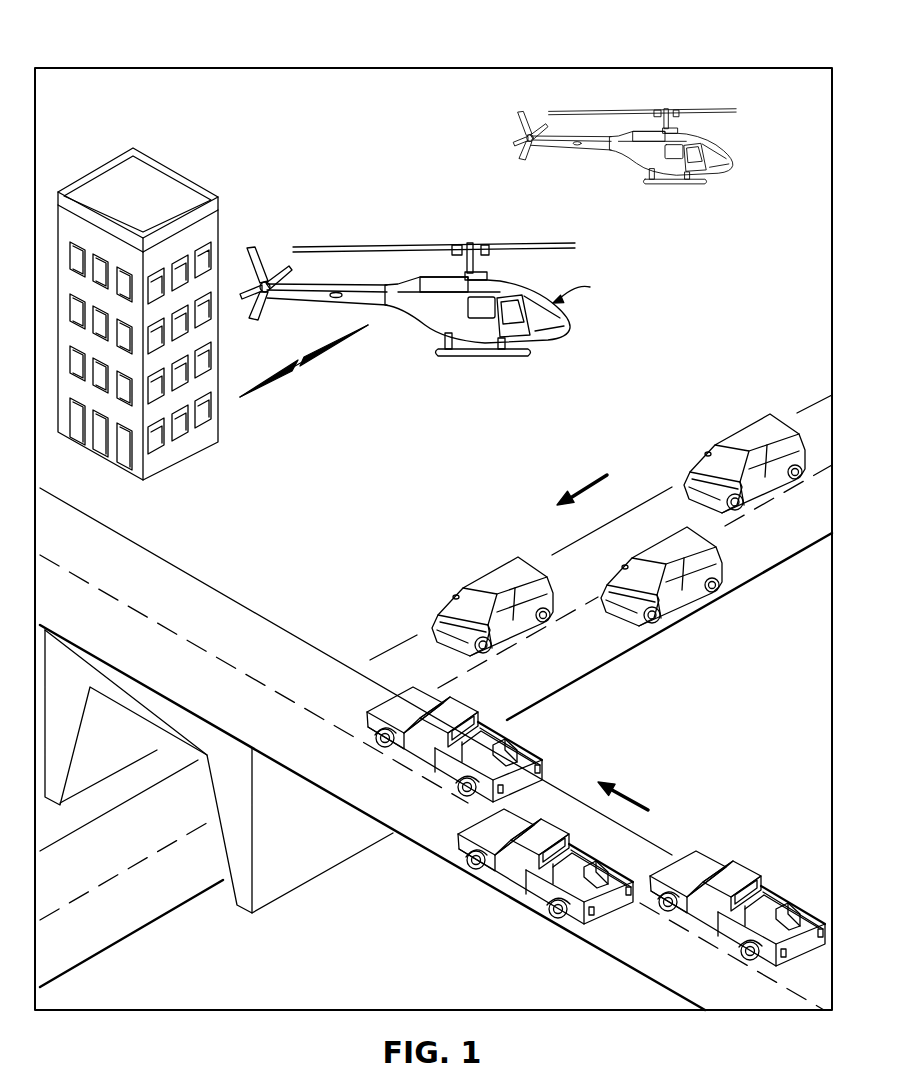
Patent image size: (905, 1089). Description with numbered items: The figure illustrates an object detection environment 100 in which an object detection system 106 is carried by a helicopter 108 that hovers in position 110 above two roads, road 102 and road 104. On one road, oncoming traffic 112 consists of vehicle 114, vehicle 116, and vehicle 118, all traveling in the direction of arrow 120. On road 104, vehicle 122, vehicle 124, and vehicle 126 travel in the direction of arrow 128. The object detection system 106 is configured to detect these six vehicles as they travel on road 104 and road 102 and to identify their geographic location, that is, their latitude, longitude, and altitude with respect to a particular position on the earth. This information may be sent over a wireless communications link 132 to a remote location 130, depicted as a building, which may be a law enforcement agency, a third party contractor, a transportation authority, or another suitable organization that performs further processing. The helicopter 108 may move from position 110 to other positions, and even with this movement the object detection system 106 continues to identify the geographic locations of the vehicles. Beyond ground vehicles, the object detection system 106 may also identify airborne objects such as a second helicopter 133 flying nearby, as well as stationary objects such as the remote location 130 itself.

The object detection environment 100 is at (642, 67).
The road 102 is at (392, 650).
The road 104 is at (216, 590).
The object detection system 106 is at (353, 232).
The helicopter 108 is at (480, 356).
The position 110 is at (591, 291).
The oncoming traffic 112 is at (510, 510).
The vehicle 114 is at (488, 570).
The vehicle 116 is at (683, 605).
The vehicle 118 is at (740, 430).
The arrow 120 is at (588, 483).
The vehicle 122 is at (523, 743).
The vehicle 124 is at (505, 882).
The vehicle 126 is at (742, 865).
The arrow 128 is at (628, 797).
The remote location 130 is at (98, 170).
The wireless communications link 132 is at (262, 384).
The helicopter 133 is at (673, 190).